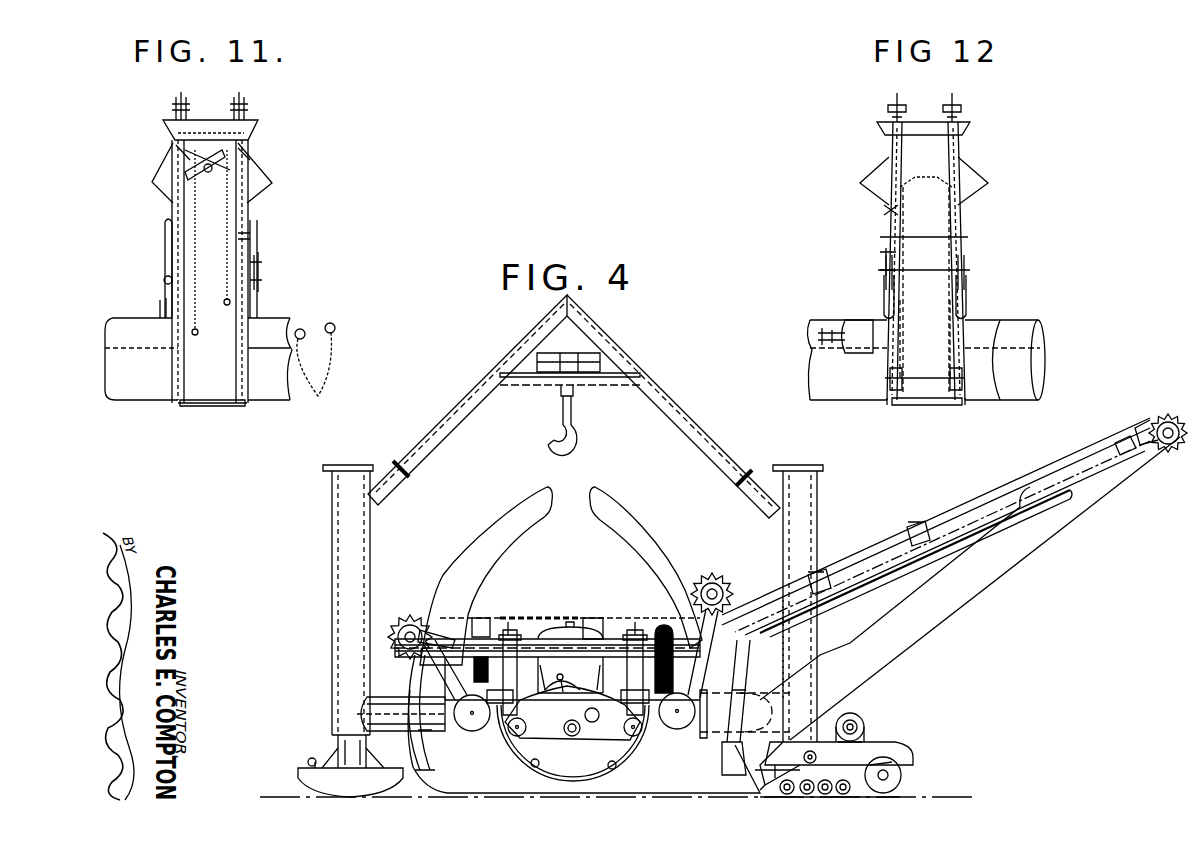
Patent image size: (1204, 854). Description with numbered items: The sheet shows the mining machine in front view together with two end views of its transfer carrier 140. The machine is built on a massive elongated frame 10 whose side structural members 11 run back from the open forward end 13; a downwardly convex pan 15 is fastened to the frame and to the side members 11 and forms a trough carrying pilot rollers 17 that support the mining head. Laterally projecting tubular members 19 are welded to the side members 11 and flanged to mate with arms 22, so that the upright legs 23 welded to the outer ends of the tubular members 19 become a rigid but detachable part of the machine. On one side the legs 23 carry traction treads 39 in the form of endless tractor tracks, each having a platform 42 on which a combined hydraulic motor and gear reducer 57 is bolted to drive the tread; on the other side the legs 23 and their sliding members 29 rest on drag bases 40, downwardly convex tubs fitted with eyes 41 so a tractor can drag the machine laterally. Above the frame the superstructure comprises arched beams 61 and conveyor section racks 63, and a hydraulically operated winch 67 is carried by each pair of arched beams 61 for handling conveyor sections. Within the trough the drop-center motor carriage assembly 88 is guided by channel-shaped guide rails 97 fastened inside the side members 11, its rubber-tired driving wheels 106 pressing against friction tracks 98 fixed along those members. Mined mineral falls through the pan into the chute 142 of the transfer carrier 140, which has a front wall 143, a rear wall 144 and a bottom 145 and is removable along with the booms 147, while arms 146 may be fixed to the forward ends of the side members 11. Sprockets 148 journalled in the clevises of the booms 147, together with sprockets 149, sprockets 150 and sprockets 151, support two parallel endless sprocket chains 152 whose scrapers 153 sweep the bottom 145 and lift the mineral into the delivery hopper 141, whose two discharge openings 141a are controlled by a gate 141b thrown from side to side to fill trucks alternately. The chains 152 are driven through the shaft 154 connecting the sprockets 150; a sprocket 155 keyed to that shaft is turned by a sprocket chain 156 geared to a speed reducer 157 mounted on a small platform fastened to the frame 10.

In FIG. 4, the elongated frame 10 is at (812, 473).
In FIG. 11, the side structural members 11 is at (325, 320).
In FIG. 12, the side structural members 11 is at (1022, 320).
In FIG. 4, the side structural members 11 is at (672, 733).
In FIG. 11, the forward end 13 is at (118, 363).
In FIG. 11, the pan 15 is at (290, 388).
In FIG. 12, the pan 15 is at (820, 370).
In FIG. 4, the pilot rollers 17 is at (605, 768).
In FIG. 4, the tubular members 19 is at (400, 700).
In FIG. 4, the arms 22 is at (690, 738).
In FIG. 4, the upright legs 23 is at (332, 526).
In FIG. 4, the sliding members 29 is at (330, 736).
In FIG. 4, the traction treads 39 is at (905, 795).
In FIG. 4, the drag bases 40 is at (310, 776).
In FIG. 4, the eyes 41 is at (318, 758).
In FIG. 4, the platform 42 is at (885, 743).
In FIG. 4, the combined hydraulic motor and gear reducer 57 is at (855, 716).
In FIG. 4, the arched beams 61 is at (499, 351).
In FIG. 4, the conveyor section racks 63 is at (535, 534).
In FIG. 4, the hydraulically operated winch 67 is at (562, 363).
In FIG. 4, the motor carriage assembly 88 is at (540, 733).
In FIG. 4, the guide rail 97 is at (490, 733).
In FIG. 4, the friction track 98 is at (663, 698).
In FIG. 4, the driving wheels 106 is at (678, 616).
In FIG. 11, the transfer carrier 140 is at (205, 234).
In FIG. 12, the transfer carrier 140 is at (968, 216).
In FIG. 11, the delivery hopper 141 is at (250, 138).
In FIG. 12, the delivery hopper 141 is at (968, 126).
In FIG. 11, the discharge openings 141a is at (172, 186).
In FIG. 12, the discharge openings 141a is at (884, 186).
In FIG. 11, the gate 141b is at (175, 143).
In FIG. 4, the chute 142 is at (1093, 503).
In FIG. 12, the front wall 143 is at (970, 390).
In FIG. 12, the rear wall 144 is at (890, 393).
In FIG. 11, the bottom 145 is at (250, 210).
In FIG. 12, the bottom 145 is at (905, 401).
In FIG. 11, the arms 146 is at (170, 304).
In FIG. 11, the booms 147 is at (170, 210).
In FIG. 12, the booms 147 is at (864, 260).
In FIG. 4, the booms 147 is at (982, 503).
In FIG. 11, the sprockets 148 is at (178, 94).
In FIG. 12, the sprockets 148 is at (952, 90).
In FIG. 4, the sprockets 148 is at (1175, 428).
In FIG. 12, the sprockets 149 is at (892, 216).
In FIG. 4, the sprockets 149 is at (714, 586).
In FIG. 12, the sprockets 150 is at (956, 260).
In FIG. 4, the sprockets 150 is at (428, 616).
In FIG. 12, the sprockets 151 is at (955, 366).
In FIG. 4, the sprockets 151 is at (425, 758).
In FIG. 12, the endless sprocket chains 152 is at (960, 298).
In FIG. 4, the endless sprocket chains 152 is at (555, 610).
In FIG. 4, the scrapers 153 is at (578, 613).
In FIG. 12, the shaft 154 is at (920, 290).
In FIG. 11, the sprocket 155 is at (262, 260).
In FIG. 12, the sprocket 155 is at (882, 260).
In FIG. 12, the sprocket chain 156 is at (886, 298).
In FIG. 12, the speed reducer 157 is at (855, 316).